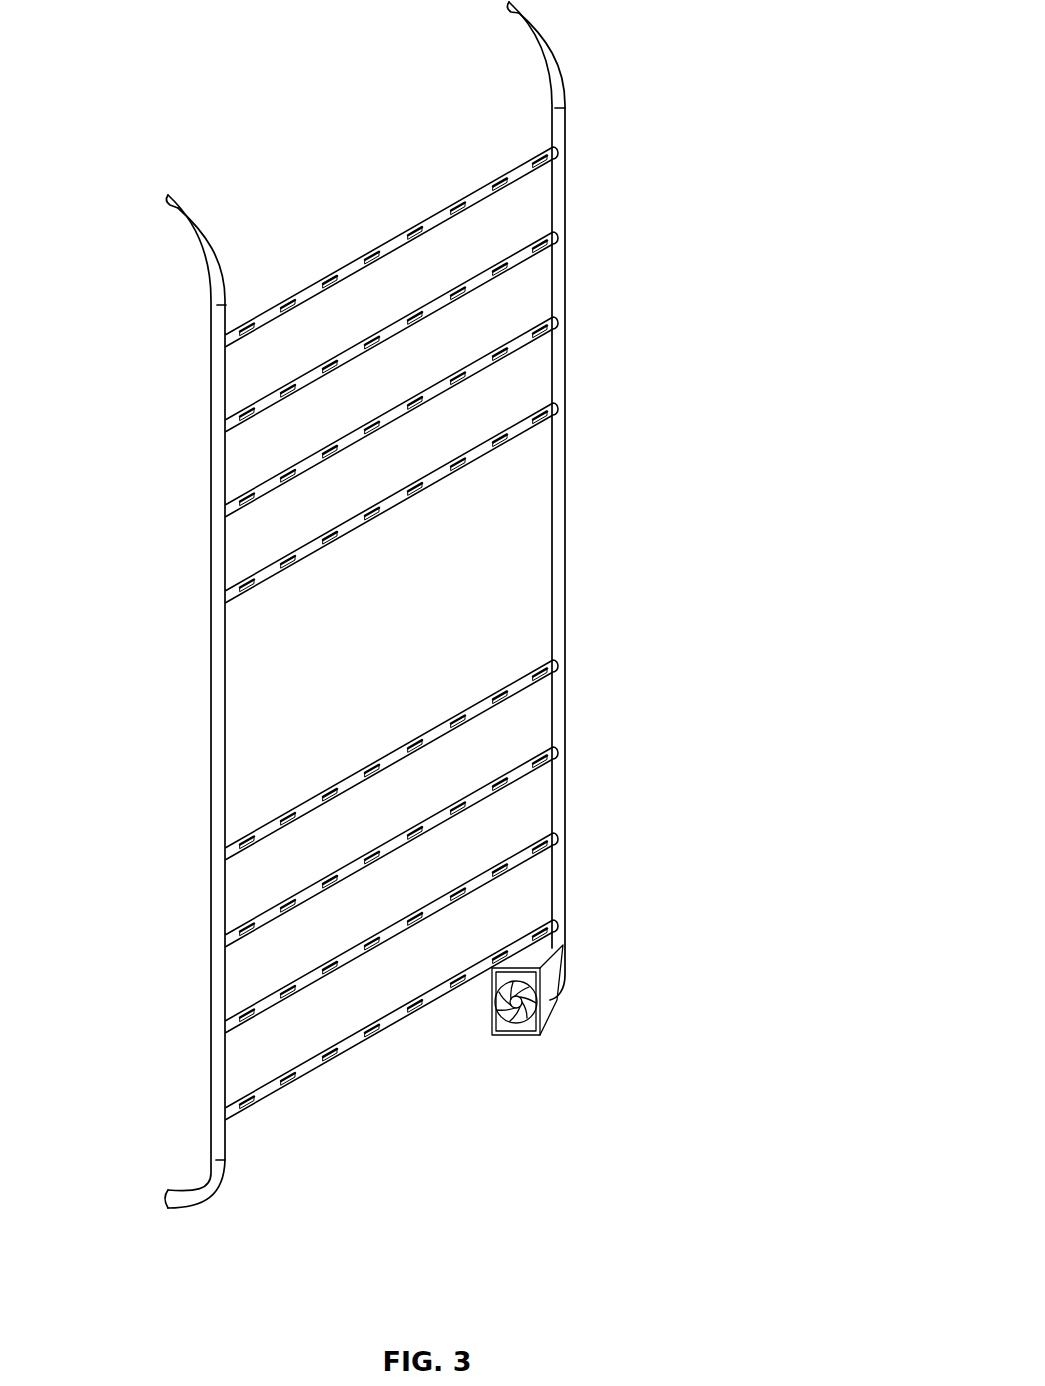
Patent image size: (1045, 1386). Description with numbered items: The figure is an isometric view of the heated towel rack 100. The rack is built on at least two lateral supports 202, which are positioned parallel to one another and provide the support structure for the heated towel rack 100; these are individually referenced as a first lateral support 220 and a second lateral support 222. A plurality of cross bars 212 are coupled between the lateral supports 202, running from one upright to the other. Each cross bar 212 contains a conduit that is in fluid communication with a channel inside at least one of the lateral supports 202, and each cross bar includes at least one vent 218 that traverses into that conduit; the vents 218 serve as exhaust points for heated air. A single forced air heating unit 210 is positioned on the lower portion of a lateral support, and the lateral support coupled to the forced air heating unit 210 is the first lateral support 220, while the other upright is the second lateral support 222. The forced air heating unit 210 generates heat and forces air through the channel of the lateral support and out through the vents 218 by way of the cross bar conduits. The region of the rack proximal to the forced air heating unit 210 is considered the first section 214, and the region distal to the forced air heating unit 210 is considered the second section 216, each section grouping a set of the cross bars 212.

The heated towel rack 100 is at (846, 68).
The lateral supports 202 is at (222, 265).
The forced air heating unit 210 is at (538, 1033).
The cross bars 212 is at (235, 605).
The first section 214 is at (187, 822).
The second section 216 is at (595, 113).
The vent 218 is at (540, 677).
The first lateral support 220 is at (596, 560).
The second lateral support 222 is at (194, 707).